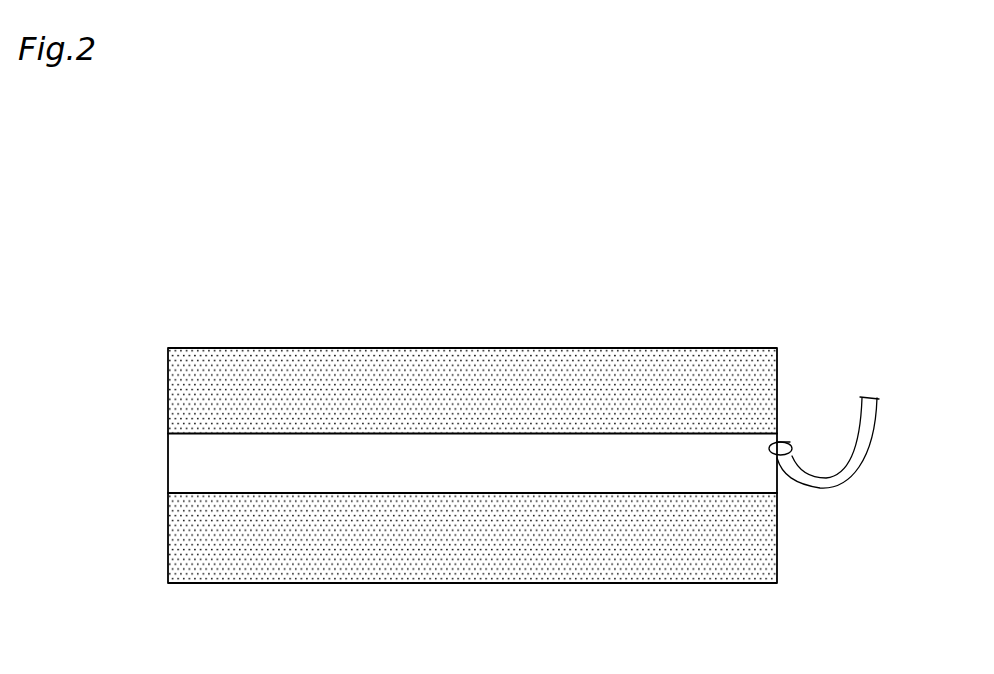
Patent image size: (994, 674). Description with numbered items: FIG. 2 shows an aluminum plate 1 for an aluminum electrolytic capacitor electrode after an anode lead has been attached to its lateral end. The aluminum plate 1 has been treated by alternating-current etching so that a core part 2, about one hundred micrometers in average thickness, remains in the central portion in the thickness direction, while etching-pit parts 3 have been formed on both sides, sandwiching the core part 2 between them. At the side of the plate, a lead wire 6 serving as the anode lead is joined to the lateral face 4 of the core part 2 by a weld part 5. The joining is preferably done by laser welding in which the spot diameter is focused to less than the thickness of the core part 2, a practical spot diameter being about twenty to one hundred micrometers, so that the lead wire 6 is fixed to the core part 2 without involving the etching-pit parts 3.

The aluminum plate for an aluminum electrolytic capacitor electrode 1 is at (737, 332).
The core part 2 is at (168, 458).
The etching-pit part 3 is at (168, 387).
The lateral face 4 is at (778, 480).
The weld part 5 is at (789, 443).
The lead wire 6 is at (870, 433).